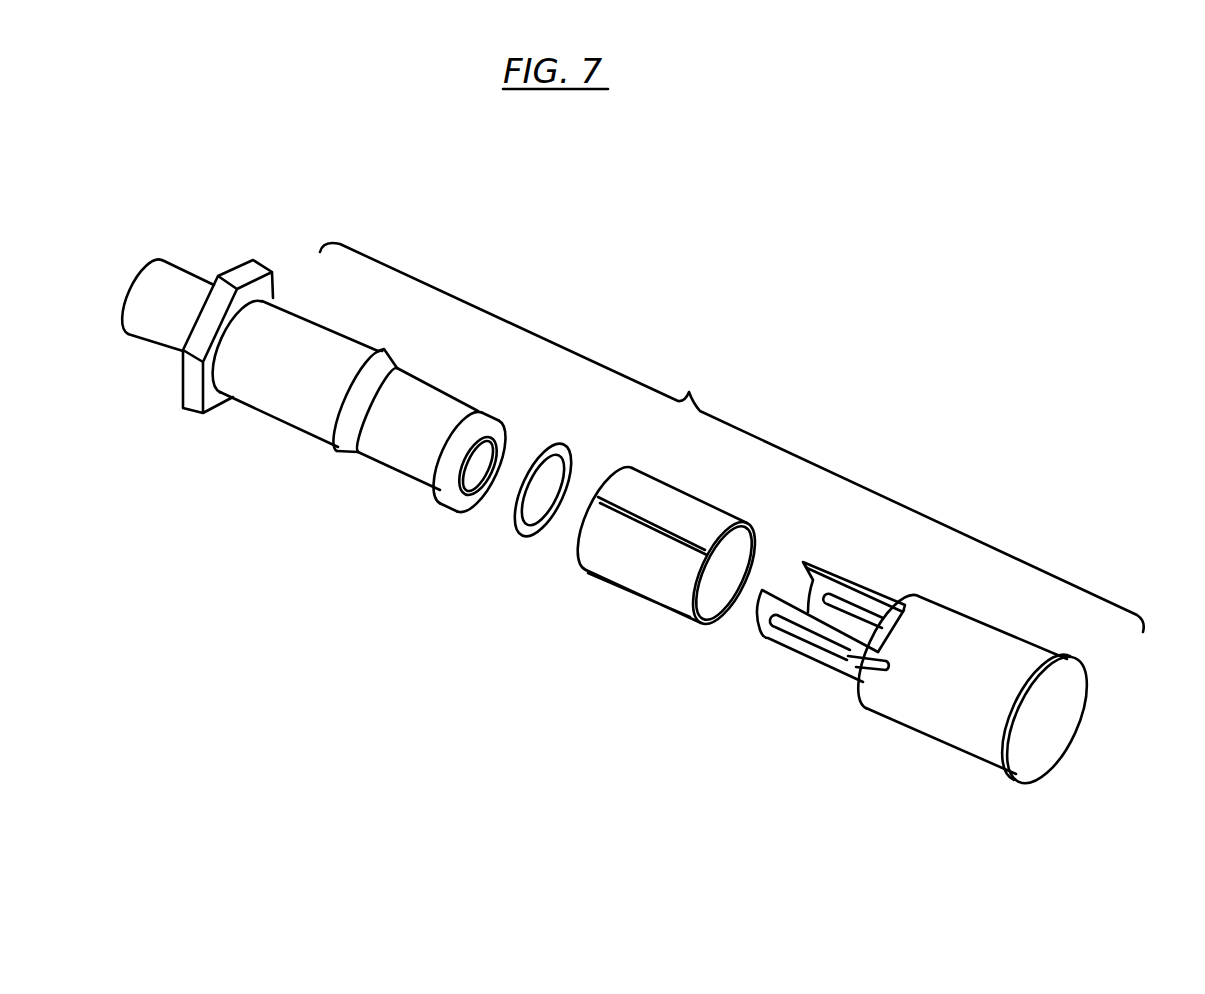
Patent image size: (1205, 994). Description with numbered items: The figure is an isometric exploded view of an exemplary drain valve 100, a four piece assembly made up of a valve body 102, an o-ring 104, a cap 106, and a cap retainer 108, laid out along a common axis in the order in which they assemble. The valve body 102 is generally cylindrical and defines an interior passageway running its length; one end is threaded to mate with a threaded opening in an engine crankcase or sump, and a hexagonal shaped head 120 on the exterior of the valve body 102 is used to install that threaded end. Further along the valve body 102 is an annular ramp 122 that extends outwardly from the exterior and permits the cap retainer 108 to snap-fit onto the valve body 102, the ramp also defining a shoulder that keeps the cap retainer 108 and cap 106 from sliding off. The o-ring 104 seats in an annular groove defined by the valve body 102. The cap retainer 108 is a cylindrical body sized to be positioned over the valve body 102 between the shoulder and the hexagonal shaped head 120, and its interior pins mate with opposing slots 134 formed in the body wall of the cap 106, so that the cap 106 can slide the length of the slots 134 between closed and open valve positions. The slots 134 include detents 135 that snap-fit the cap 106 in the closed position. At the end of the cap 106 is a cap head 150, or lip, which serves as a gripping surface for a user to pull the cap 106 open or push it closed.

The drain valve 100 is at (732, 437).
The valve body 102 is at (275, 398).
The o-ring 104 is at (522, 530).
The cap 106 is at (967, 727).
The cap retainer 108 is at (618, 570).
The hexagonal shaped head 120 is at (242, 266).
The annular ramp 122 is at (343, 455).
The slots 134 is at (790, 627).
The detents 135 is at (847, 655).
The cap head 150 is at (1068, 705).